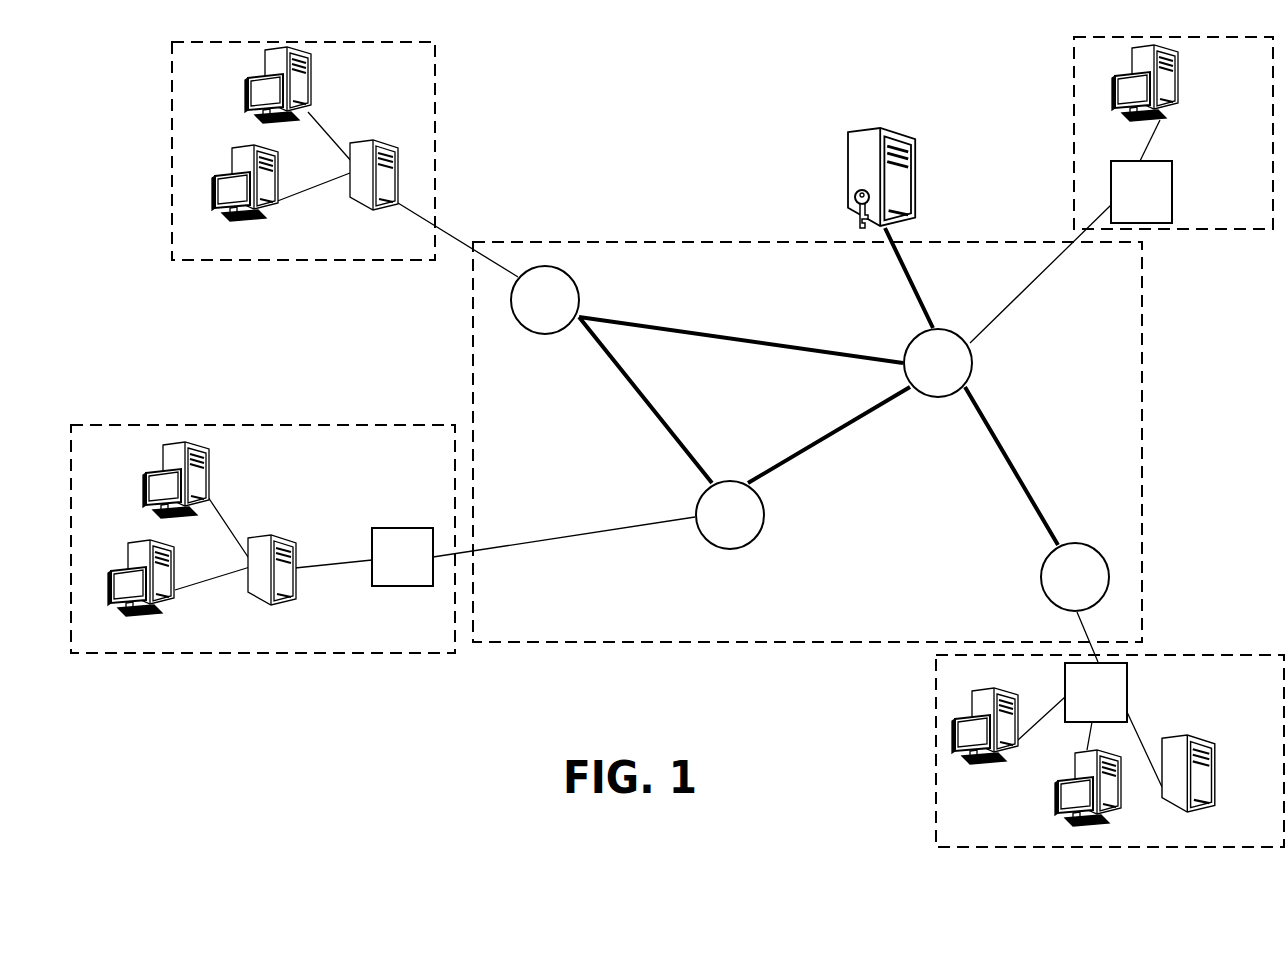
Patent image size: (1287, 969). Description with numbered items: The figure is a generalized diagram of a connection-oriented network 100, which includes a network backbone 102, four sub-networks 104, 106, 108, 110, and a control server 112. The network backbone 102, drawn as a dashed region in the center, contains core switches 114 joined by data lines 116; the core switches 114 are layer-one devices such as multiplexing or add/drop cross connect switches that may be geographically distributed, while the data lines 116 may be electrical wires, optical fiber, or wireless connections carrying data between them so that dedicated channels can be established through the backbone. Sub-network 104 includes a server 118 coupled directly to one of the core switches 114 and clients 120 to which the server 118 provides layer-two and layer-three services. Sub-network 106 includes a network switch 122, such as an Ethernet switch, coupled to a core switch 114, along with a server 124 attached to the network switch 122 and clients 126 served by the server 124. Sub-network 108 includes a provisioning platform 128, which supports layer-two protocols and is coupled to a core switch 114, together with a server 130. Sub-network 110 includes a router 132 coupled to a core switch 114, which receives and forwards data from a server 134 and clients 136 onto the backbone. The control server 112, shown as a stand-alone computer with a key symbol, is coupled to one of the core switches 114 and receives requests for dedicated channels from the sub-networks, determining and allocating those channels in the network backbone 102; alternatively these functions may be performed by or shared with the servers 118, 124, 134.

The connection-oriented network 100 is at (596, 55).
The network backbone 102 is at (654, 232).
The sub-network 104 is at (303, 151).
The sub-network 106 is at (263, 539).
The sub-network 108 is at (1173, 133).
The sub-network 110 is at (1110, 751).
The control server 112 is at (850, 130).
The core switches 114 is at (810, 438).
The data lines 116 is at (763, 333).
The server 118 is at (380, 130).
The clients 120 is at (225, 145).
The network switch 122 is at (402, 557).
The server 124 is at (278, 522).
The clients 126 is at (122, 540).
The provisioning platform 128 is at (1141, 192).
The server 130 is at (1188, 90).
The router 132 is at (1096, 692).
The server 134 is at (1180, 722).
The clients 136 is at (1043, 793).